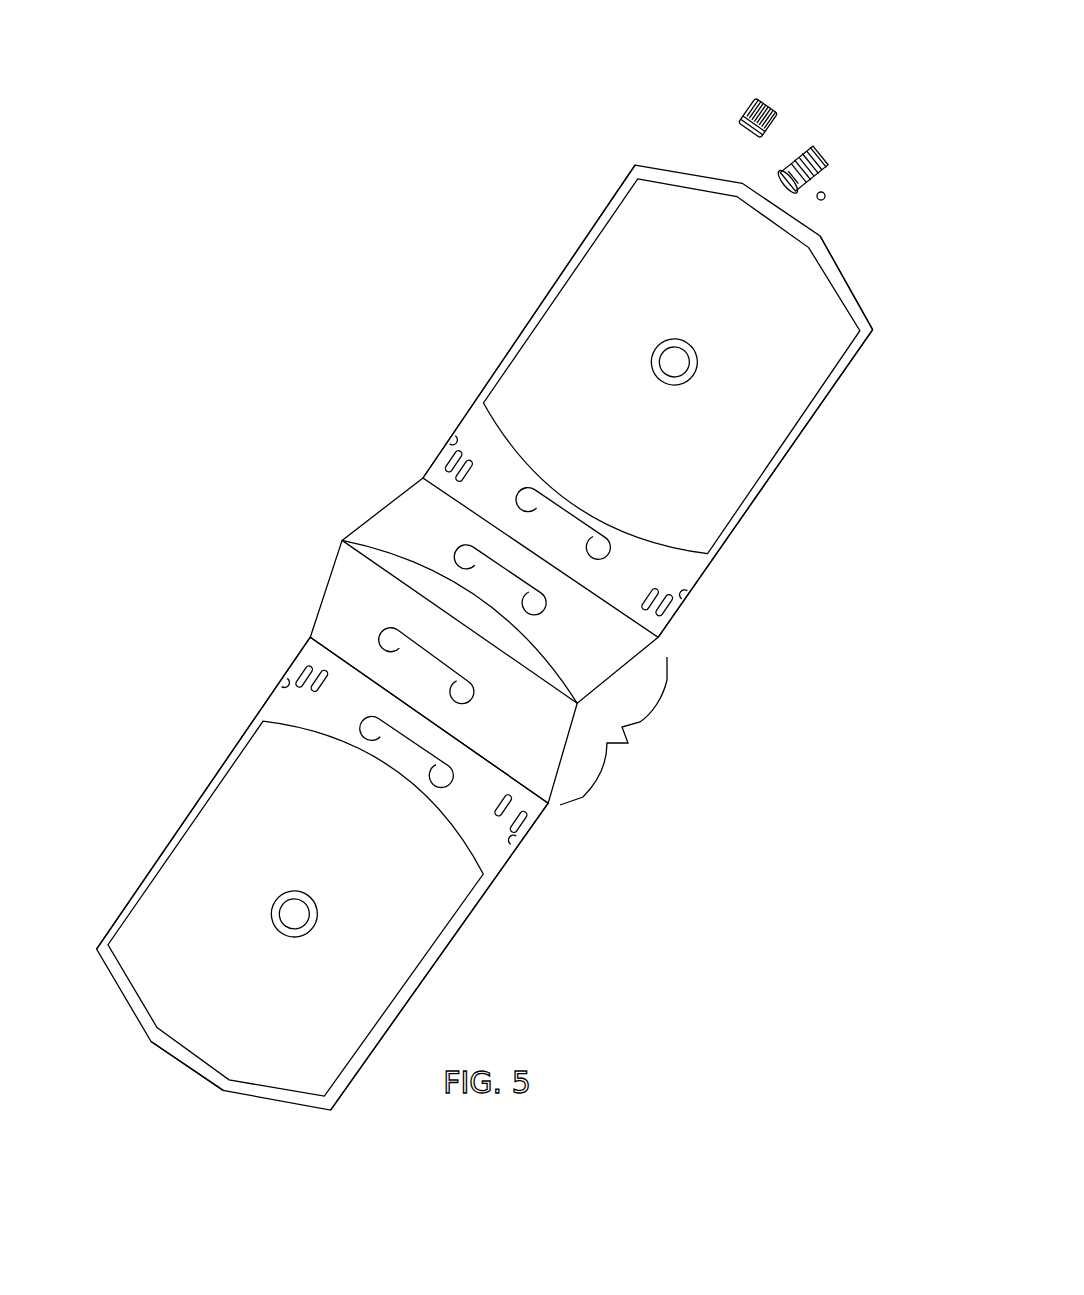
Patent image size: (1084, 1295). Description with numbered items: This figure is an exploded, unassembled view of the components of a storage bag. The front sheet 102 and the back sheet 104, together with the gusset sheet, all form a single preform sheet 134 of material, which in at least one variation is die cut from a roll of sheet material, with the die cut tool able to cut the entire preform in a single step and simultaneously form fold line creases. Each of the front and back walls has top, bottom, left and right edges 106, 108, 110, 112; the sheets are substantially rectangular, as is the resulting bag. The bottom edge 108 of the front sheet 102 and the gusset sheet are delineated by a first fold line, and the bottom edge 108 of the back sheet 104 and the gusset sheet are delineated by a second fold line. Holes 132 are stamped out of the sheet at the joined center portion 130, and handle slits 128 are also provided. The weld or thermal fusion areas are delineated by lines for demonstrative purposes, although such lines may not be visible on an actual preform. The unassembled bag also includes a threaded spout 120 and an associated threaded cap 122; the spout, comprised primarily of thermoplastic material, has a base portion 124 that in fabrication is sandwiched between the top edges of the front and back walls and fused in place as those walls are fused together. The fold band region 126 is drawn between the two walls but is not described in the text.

The front sheet 102 is at (661, 384).
The back sheet 104 is at (311, 893).
The top edge 106 is at (846, 287).
The bottom edge 108 is at (537, 664).
The left edge 110 is at (552, 287).
The right edge 112 is at (807, 432).
The threaded spout 120 is at (826, 158).
The threaded cap 122 is at (770, 98).
The base portion 124 is at (826, 197).
The fold band 126 is at (382, 532).
The handle slits 128 is at (516, 492).
The joined center portion 130 is at (660, 376).
The holes 132 is at (485, 637).
The preform sheet 134 is at (628, 742).